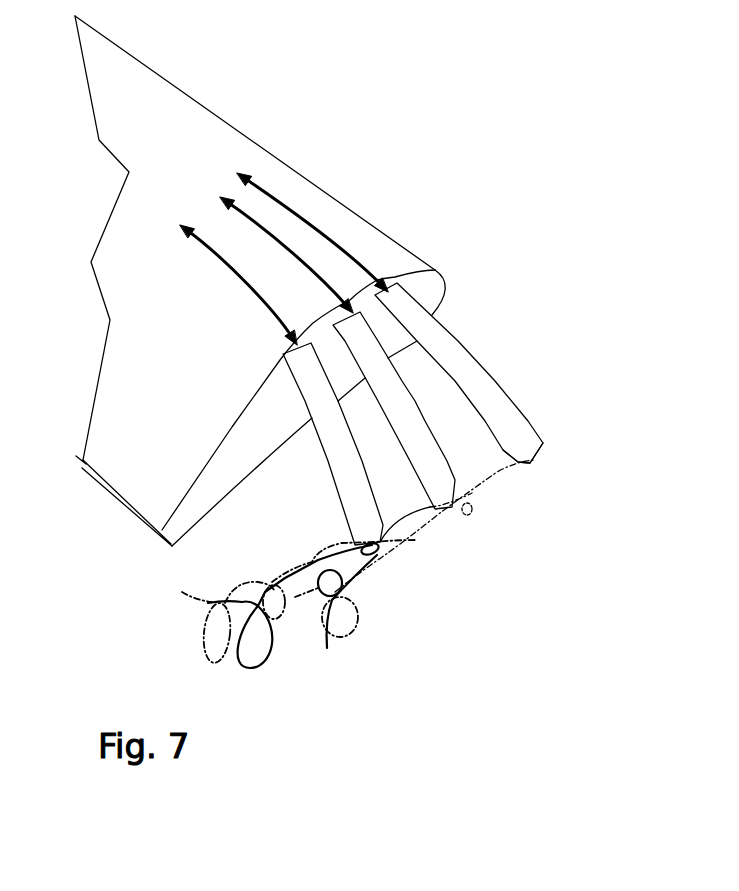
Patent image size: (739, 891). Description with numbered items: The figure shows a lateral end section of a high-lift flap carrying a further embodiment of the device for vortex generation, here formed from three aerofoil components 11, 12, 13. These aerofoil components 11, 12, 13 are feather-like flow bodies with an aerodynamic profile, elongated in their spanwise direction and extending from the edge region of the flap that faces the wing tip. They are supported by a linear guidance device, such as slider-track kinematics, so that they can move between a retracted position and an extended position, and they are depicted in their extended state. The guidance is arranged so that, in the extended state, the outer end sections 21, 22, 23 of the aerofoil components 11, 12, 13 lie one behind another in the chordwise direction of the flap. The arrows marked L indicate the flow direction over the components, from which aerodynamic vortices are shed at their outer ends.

The aerofoil component 11 is at (396, 497).
The aerofoil component 12 is at (459, 452).
The aerofoil component 13 is at (488, 444).
The end section 21 is at (298, 617).
The end section 22 is at (435, 493).
The end section 23 is at (528, 443).
The air flow direction L is at (468, 318).